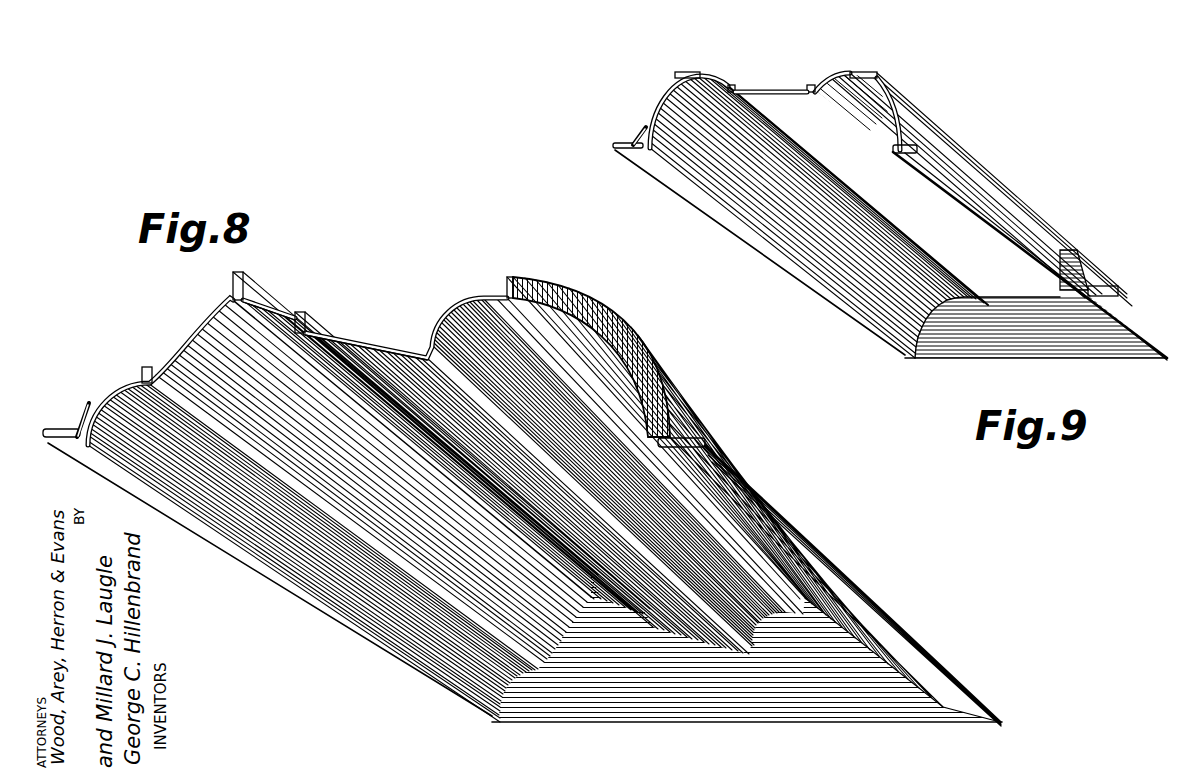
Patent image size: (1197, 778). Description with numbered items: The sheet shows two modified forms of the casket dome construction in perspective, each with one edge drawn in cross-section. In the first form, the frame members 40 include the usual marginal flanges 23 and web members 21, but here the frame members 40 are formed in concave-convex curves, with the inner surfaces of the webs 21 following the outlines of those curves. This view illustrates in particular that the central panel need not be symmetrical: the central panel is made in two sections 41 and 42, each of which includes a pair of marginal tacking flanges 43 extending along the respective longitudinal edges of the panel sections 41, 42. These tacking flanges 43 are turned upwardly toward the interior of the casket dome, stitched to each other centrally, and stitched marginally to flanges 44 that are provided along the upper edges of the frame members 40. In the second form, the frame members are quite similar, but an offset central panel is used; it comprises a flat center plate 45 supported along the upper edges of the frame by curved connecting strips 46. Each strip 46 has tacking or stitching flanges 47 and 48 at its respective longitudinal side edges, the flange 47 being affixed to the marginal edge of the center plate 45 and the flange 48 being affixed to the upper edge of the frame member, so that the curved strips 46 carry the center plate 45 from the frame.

In FIG. 8, the web member 21 is at (645, 388).
In FIG. 8, the marginal flange 23 is at (805, 535).
In FIG. 8, the frame member 40 is at (887, 607).
In FIG. 8, the panel section 41 is at (285, 310).
In FIG. 8, the panel section 42 is at (378, 348).
In FIG. 8, the marginal tacking flange 43 is at (248, 292).
In FIG. 8, the flange 44 is at (233, 285).
In FIG. 9, the center plate 45 is at (778, 92).
In FIG. 9, the curved connecting strip 46 is at (705, 78).
In FIG. 9, the tacking flange 47 is at (733, 86).
In FIG. 9, the tacking flange 48 is at (680, 72).